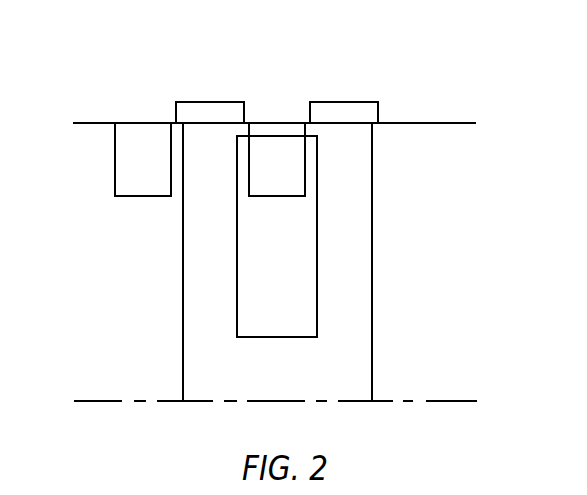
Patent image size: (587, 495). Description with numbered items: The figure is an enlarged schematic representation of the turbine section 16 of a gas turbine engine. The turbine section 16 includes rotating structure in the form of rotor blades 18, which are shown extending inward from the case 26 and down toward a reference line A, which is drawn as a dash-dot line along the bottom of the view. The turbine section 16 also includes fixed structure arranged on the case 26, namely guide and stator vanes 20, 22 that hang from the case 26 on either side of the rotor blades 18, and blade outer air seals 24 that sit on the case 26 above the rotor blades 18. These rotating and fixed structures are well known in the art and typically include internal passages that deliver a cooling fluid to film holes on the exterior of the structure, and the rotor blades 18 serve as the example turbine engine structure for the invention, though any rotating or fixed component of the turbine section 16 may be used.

The turbine section 16 is at (476, 182).
The rotor blades 18 is at (183, 228).
The guide vane 20 is at (115, 161).
The stator vane 22 is at (285, 196).
The blade outer air seals 24 is at (235, 102).
The case 26 is at (418, 123).
The reference axis A is at (467, 401).